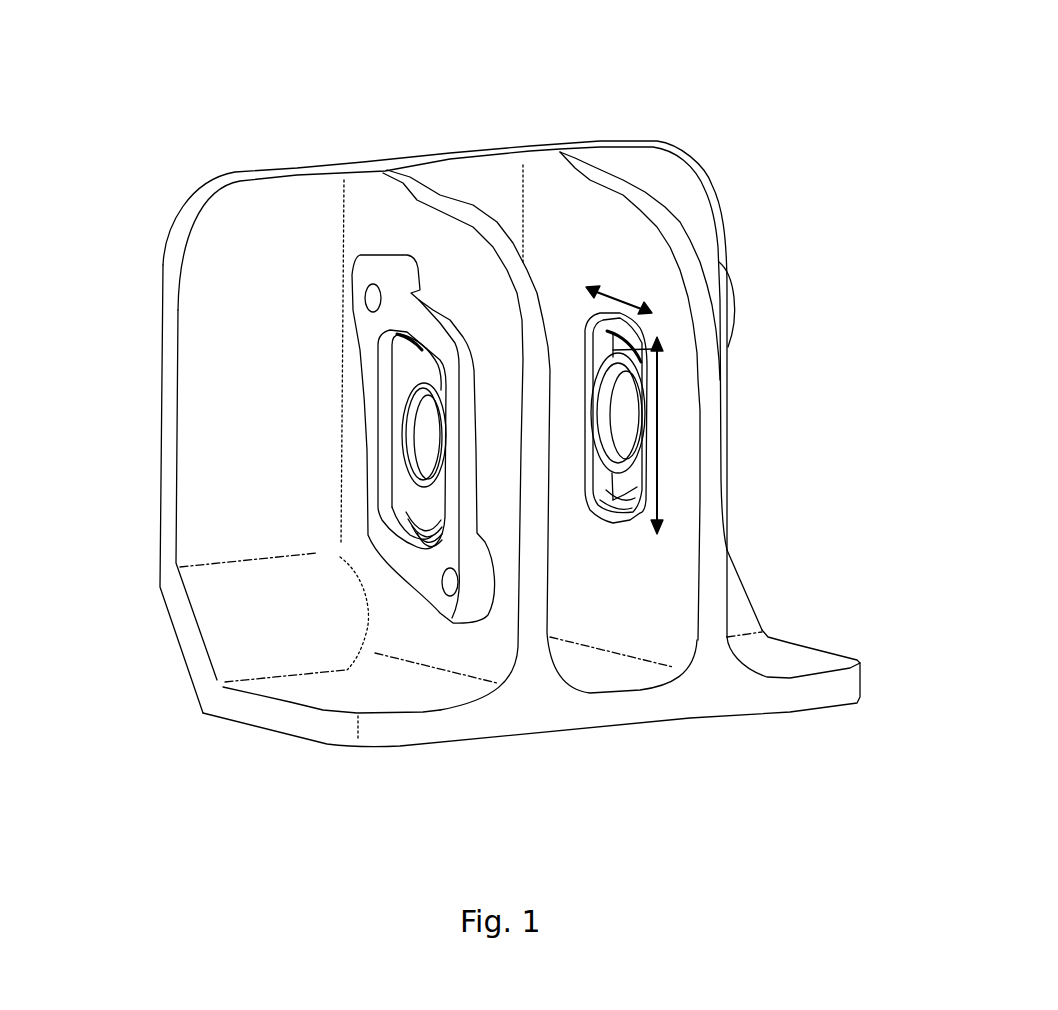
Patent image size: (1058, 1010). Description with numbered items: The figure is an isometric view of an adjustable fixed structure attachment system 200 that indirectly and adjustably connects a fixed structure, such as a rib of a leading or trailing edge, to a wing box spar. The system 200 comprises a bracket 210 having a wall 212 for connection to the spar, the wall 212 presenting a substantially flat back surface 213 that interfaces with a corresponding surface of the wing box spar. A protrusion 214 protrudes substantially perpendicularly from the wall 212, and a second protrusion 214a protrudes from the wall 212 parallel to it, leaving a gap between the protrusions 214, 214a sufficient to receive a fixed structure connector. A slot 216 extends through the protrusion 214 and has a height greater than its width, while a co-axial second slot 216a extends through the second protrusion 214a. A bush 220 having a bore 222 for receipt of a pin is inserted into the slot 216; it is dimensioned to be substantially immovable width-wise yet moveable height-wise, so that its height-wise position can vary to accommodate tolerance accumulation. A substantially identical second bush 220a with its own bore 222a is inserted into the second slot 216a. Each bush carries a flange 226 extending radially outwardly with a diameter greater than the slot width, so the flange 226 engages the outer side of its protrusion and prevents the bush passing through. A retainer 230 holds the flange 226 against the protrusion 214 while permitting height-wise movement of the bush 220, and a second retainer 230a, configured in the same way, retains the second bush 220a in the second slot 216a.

The adjustable fixed structure attachment system 200 is at (382, 97).
The bracket 210 is at (248, 222).
The wall 212 is at (173, 287).
The back surface 213 is at (615, 137).
The protrusion 214 is at (380, 222).
The second protrusion 214a is at (667, 219).
The slot 216 is at (410, 537).
The second slot 216a is at (625, 329).
The bush 220 is at (407, 483).
The second bush 220a is at (627, 463).
The bore 222 is at (420, 428).
The bore of second bush 222a is at (617, 423).
The flange 226 is at (410, 360).
The retainer 230 is at (376, 538).
The second retainer 230a is at (733, 285).